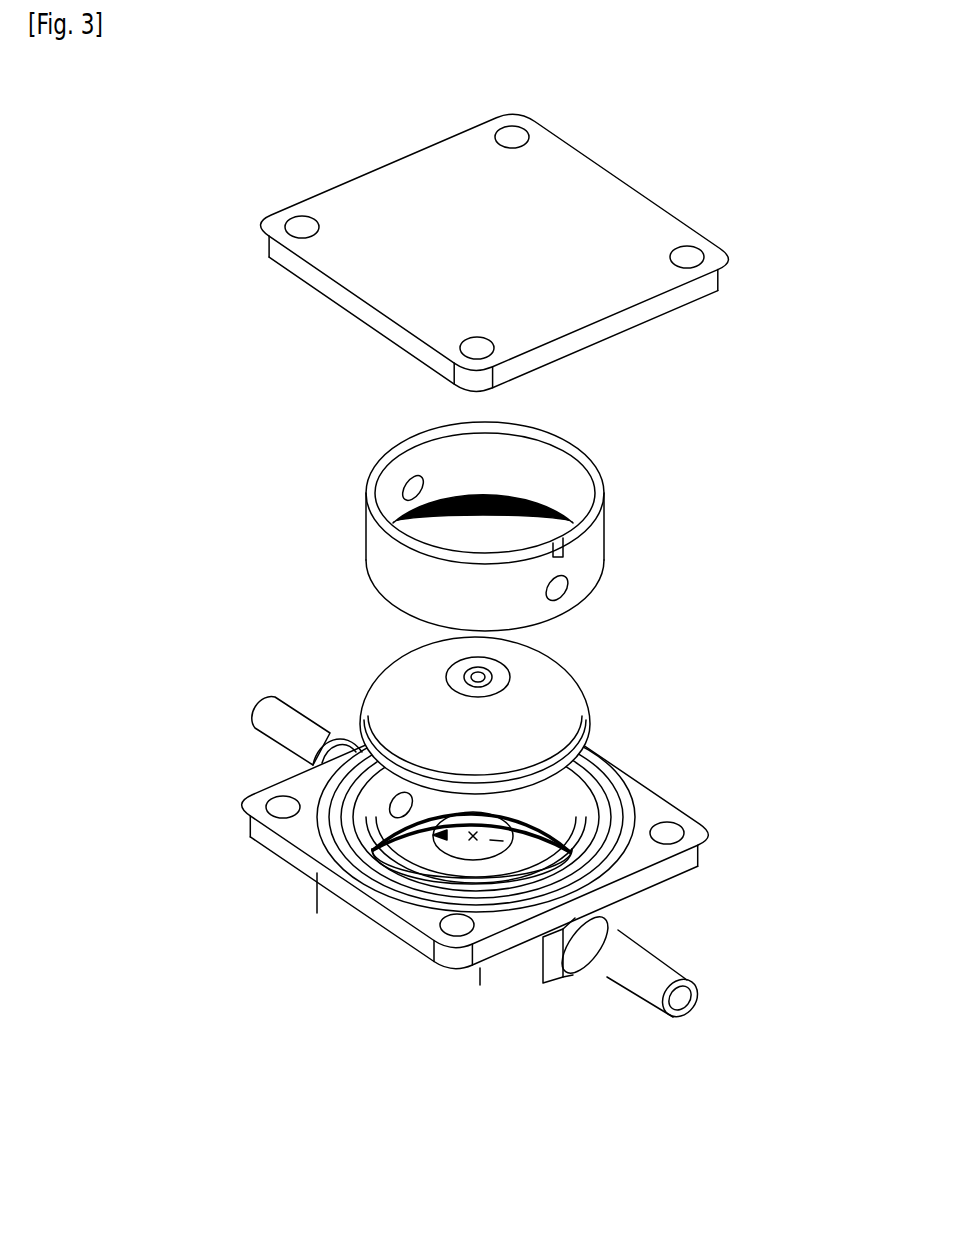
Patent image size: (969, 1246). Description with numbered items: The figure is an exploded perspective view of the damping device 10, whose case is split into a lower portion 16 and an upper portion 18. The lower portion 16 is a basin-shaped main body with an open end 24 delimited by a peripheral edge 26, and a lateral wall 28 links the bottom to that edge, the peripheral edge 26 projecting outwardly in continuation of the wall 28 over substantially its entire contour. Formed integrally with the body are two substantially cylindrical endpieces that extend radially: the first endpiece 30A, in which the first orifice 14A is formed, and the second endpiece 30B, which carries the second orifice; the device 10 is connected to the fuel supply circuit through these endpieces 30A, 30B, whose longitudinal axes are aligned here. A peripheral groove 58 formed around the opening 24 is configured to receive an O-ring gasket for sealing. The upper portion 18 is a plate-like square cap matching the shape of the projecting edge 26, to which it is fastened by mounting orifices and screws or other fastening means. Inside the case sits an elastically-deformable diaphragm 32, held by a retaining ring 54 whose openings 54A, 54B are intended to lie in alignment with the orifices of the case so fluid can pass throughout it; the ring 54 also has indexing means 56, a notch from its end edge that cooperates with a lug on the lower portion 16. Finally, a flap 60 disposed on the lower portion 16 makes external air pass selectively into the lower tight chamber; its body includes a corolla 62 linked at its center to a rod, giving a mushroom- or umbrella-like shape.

The device 10 is at (695, 182).
The first orifice 14A is at (383, 800).
The lower portion 16 is at (362, 930).
The upper portion 18 is at (347, 217).
The open end 24 is at (400, 798).
The peripheral edge 26 is at (433, 943).
The lateral wall 28 is at (517, 965).
The first endpiece 30A is at (273, 715).
The second endpiece 30B is at (660, 978).
The diaphragm 32 is at (540, 702).
The ring 54 is at (403, 562).
The opening 54A is at (407, 487).
The opening 54B is at (565, 588).
The indexing means 56 is at (565, 548).
The peripheral groove 58 is at (638, 884).
The flap 60 is at (372, 848).
The corolla 62 is at (513, 838).